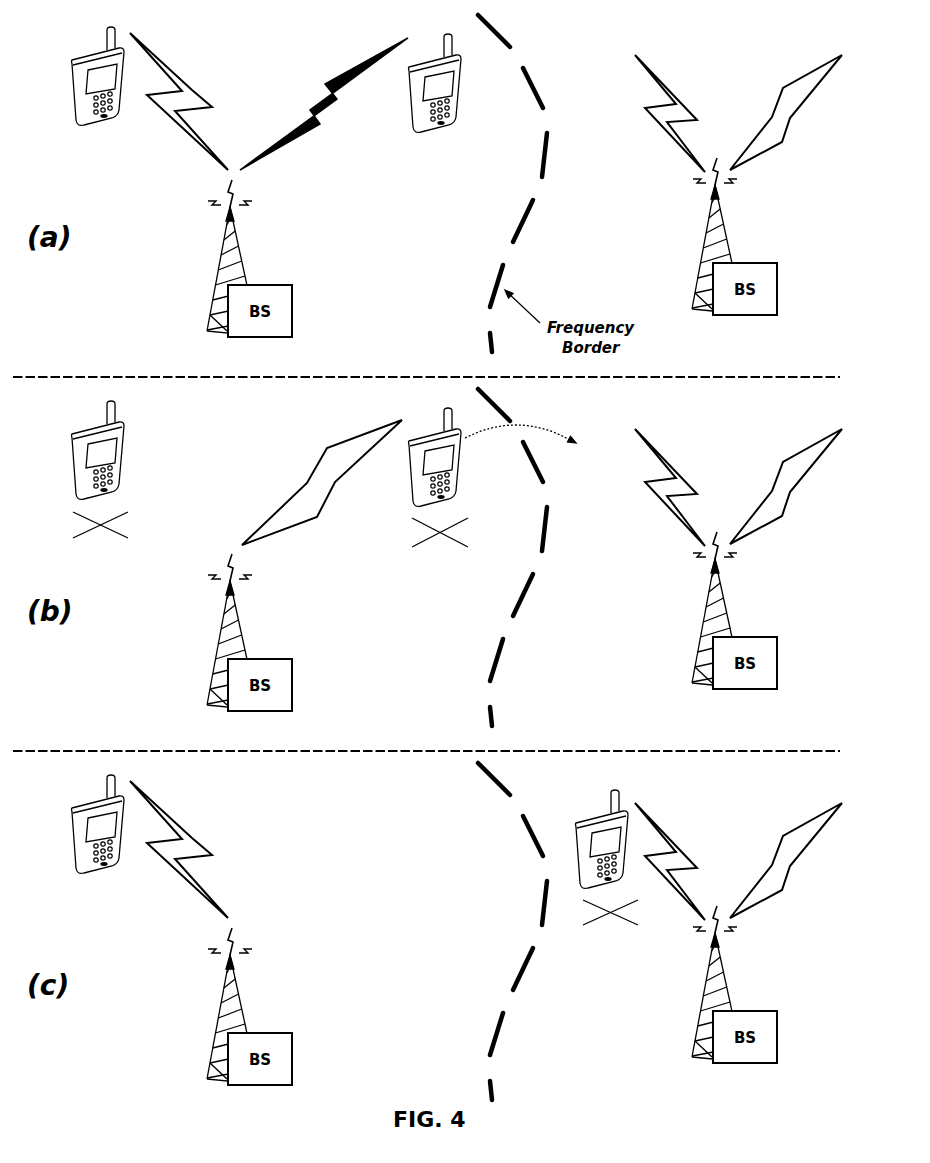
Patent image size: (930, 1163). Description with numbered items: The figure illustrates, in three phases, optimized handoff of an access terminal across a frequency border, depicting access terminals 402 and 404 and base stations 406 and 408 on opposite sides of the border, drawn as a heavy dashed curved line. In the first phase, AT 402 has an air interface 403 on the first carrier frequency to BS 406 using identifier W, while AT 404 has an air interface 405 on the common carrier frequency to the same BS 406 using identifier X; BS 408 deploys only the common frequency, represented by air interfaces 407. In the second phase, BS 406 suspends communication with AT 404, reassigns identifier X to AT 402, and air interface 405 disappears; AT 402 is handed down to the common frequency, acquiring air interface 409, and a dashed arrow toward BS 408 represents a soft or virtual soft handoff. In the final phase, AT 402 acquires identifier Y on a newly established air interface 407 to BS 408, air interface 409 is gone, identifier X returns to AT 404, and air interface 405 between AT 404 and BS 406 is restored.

The access terminal 402 is at (460, 75).
The air interface 403 is at (383, 62).
The access terminal 404 is at (70, 75).
The air interface 405 is at (193, 88).
The base station 406 is at (293, 298).
The air interfaces 407 is at (775, 90).
The base station 408 is at (777, 277).
The air interface 409 is at (385, 437).